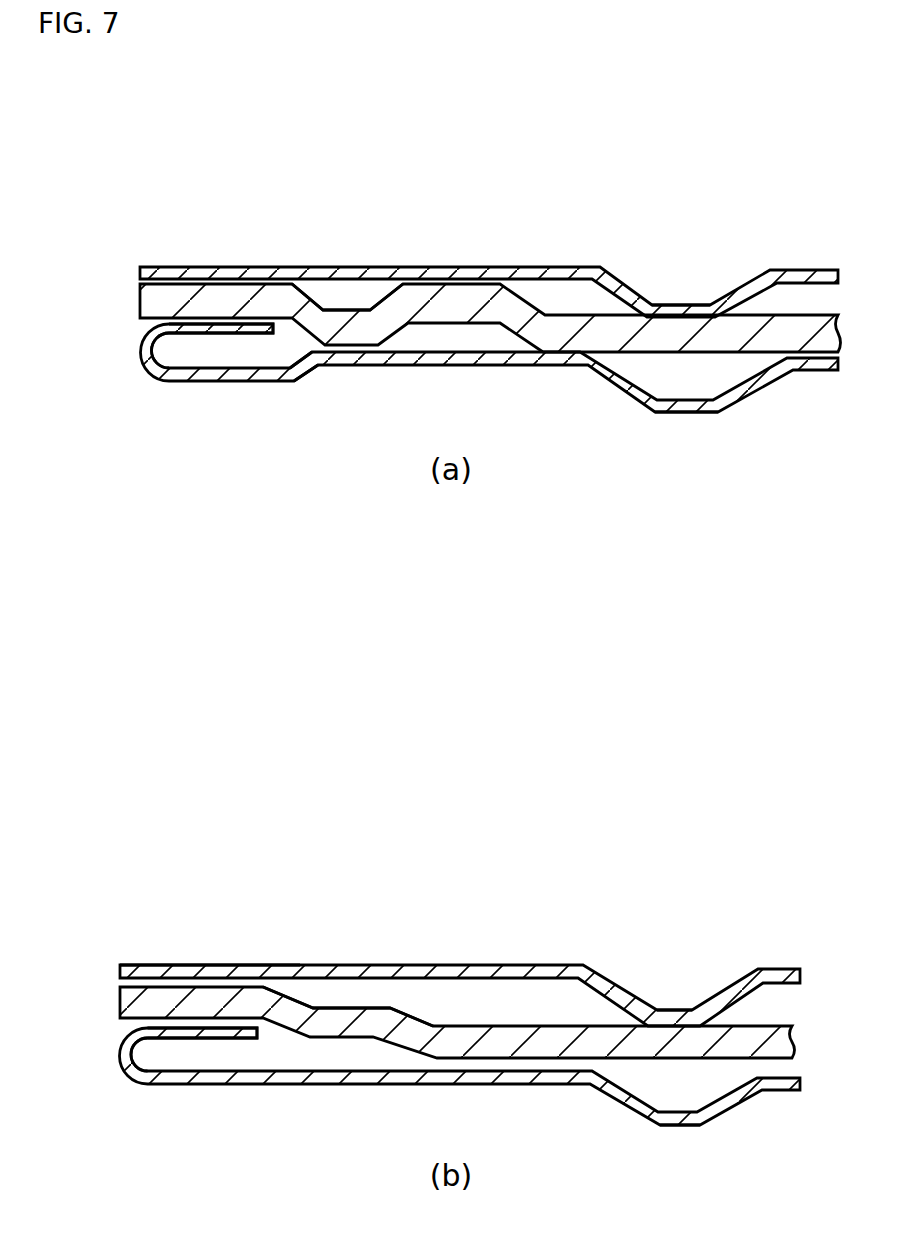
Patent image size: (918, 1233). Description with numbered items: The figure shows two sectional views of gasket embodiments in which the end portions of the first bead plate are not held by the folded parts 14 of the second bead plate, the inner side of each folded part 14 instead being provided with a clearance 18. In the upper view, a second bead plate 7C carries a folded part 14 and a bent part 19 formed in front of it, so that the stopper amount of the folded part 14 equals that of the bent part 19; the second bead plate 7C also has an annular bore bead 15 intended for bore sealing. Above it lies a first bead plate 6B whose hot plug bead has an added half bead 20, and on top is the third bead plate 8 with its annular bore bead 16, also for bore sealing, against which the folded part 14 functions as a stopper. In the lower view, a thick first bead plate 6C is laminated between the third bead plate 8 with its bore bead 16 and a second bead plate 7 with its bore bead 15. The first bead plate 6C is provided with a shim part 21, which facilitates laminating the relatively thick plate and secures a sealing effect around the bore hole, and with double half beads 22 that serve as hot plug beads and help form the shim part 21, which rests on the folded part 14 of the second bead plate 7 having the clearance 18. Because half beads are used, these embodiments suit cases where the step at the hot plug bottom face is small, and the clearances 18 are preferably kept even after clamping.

The third bead plate 8 is at (805, 270).
The first bead plate 6B is at (625, 333).
The first bead plate 6C is at (587, 1045).
The second bead plate 7C is at (808, 372).
The second bead plate 7 is at (783, 1090).
The folded part 14 is at (204, 330).
The bore bead 15 is at (692, 413).
The bore bead 16 is at (687, 300).
The clearance 18 is at (195, 358).
The bent part 19 is at (303, 369).
The half bead 20 is at (312, 300).
The shim part 21 is at (165, 985).
The half bead 22 is at (408, 1022).